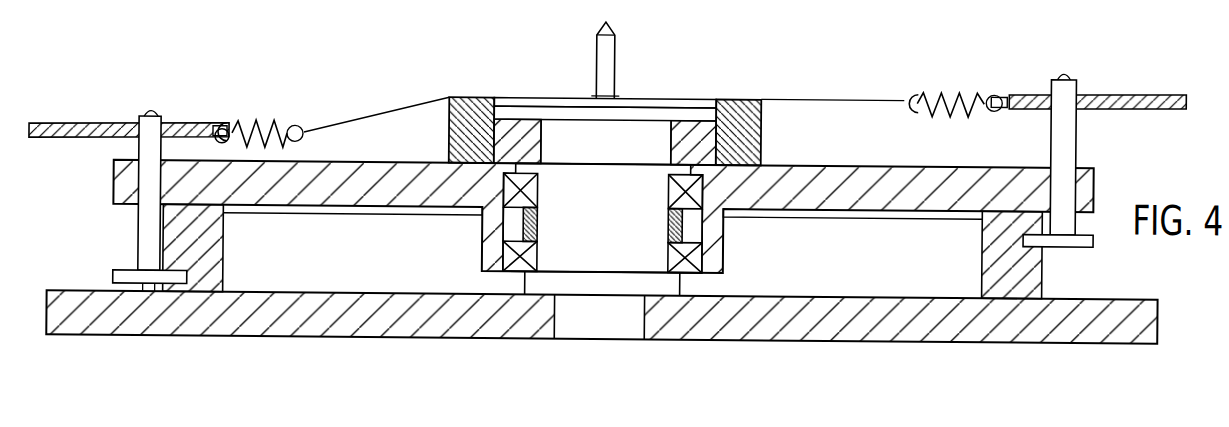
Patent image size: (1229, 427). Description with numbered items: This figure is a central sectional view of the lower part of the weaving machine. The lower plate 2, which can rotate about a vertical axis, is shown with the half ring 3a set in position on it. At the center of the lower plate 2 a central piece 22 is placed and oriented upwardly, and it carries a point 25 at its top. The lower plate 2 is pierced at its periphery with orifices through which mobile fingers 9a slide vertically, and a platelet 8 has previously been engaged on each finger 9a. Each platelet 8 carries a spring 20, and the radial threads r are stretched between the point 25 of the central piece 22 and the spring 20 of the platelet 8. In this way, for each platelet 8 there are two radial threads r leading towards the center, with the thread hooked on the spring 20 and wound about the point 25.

The lower plate 2 is at (392, 186).
The half ring 3a is at (468, 113).
The platelet 8 is at (100, 127).
The mobile finger 9a is at (142, 218).
The spring 20 is at (280, 130).
The central piece 22 is at (563, 110).
The point 25 is at (608, 56).
The radial thread r is at (367, 119).